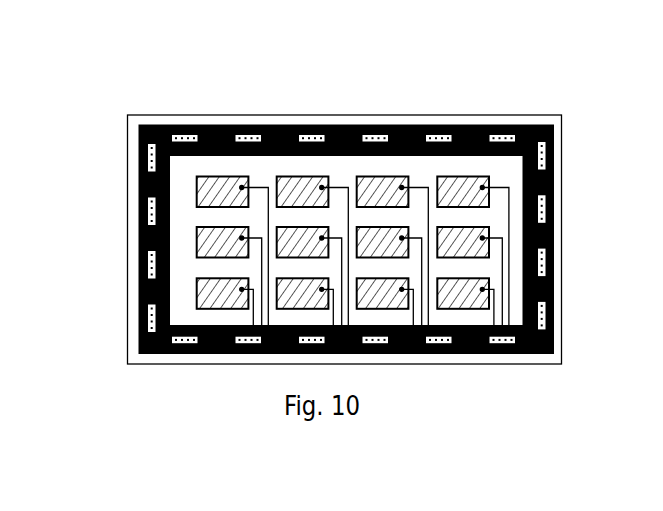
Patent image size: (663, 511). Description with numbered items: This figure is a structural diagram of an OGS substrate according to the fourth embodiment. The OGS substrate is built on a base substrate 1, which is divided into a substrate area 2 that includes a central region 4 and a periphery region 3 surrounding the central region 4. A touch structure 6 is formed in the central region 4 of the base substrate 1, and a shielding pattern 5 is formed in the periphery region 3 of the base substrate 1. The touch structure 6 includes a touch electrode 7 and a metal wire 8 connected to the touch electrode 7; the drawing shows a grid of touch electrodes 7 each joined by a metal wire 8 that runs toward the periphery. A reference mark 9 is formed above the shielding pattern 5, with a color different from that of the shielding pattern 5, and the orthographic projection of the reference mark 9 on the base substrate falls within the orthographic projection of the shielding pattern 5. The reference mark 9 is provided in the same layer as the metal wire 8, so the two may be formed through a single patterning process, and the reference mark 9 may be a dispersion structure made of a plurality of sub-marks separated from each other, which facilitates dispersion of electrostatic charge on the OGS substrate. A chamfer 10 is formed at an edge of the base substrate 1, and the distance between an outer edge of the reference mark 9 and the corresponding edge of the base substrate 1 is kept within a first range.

The base substrate 1 is at (564, 175).
The substrate area 2 is at (547, 43).
The periphery region 3 is at (418, 123).
The central region 4 is at (480, 168).
The shielding pattern 5 is at (235, 125).
The touch structure 6 is at (60, 185).
The touch electrode 7 is at (197, 241).
The metal wire 8 is at (260, 267).
The reference mark 9 is at (141, 154).
The chamfer 10 is at (134, 322).